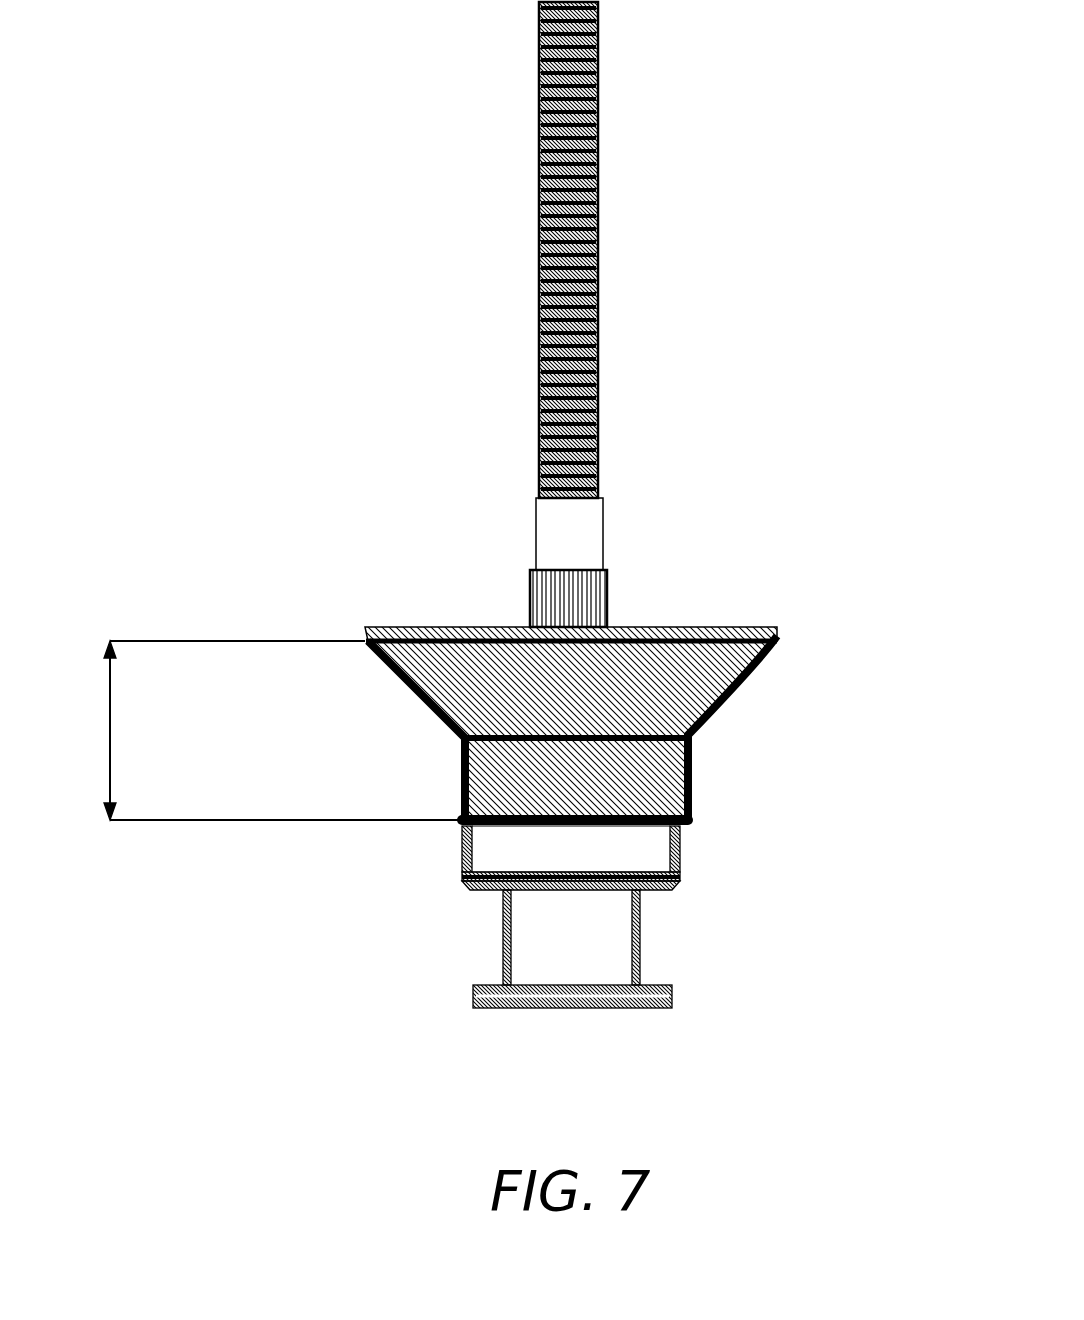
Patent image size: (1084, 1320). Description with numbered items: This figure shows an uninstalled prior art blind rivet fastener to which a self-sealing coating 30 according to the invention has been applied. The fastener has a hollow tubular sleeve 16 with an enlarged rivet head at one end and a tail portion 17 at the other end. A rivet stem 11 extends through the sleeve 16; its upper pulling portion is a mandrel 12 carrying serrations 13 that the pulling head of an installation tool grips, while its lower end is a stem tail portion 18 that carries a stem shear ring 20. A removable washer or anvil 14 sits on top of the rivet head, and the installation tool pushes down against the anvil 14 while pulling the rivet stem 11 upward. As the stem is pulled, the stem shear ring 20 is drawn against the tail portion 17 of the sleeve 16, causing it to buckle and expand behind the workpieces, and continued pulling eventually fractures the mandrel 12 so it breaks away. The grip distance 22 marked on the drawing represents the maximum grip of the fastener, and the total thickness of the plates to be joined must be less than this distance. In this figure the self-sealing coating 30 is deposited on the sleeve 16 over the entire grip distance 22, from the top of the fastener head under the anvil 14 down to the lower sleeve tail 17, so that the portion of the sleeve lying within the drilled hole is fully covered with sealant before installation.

The rivet stem 11 is at (498, 344).
The mandrel 12 is at (580, 273).
The serrations 13 is at (590, 75).
The anvil 14 is at (652, 627).
The sleeve 16 is at (752, 773).
The tail portion 17 is at (660, 861).
The stem tail portion 18 is at (522, 965).
The stem shear ring 20 is at (655, 902).
The grip distance 22 is at (276, 730).
The self-sealing coating 30 is at (424, 712).